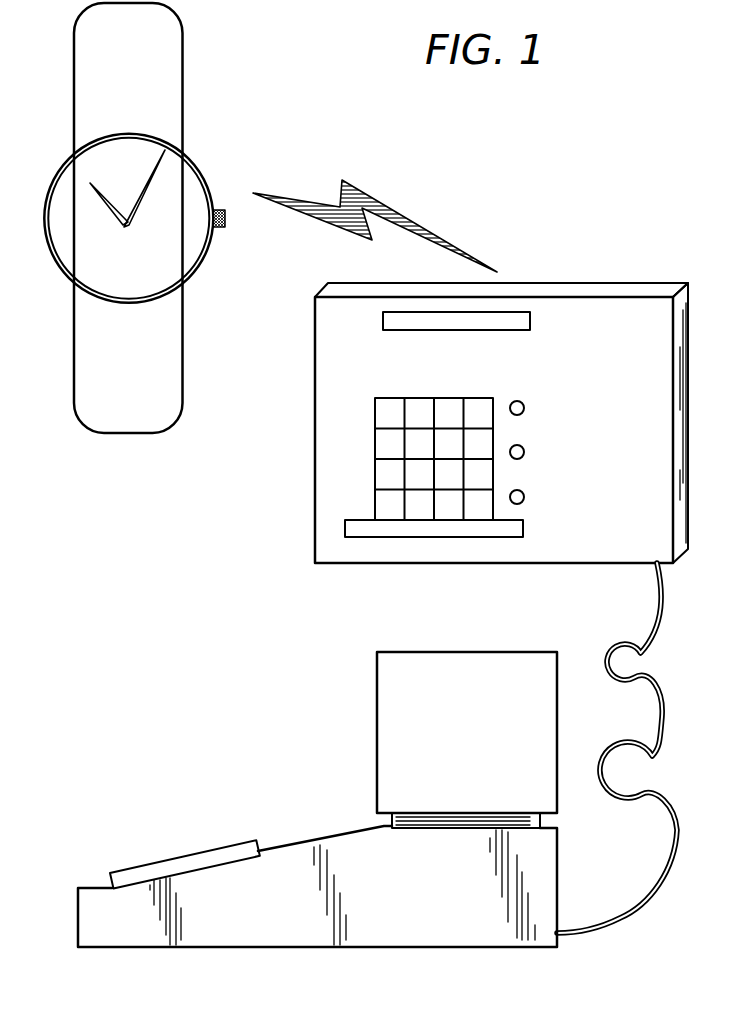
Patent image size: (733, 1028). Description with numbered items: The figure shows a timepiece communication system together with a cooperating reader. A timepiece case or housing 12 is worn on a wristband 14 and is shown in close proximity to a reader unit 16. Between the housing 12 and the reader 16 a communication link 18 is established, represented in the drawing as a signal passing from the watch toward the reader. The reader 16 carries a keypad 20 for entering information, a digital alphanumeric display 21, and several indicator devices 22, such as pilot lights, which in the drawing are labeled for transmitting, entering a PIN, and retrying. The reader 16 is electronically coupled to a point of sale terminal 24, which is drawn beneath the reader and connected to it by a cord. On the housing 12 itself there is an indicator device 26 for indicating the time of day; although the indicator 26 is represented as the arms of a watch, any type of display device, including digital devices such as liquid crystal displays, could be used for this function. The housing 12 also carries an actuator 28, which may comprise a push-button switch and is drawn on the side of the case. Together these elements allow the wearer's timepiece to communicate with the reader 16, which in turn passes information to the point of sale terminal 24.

The timepiece case or housing 12 is at (65, 273).
The wristband 14 is at (92, 327).
The reader unit 16 is at (630, 310).
The communication link 18 is at (379, 203).
The keypad 20 is at (378, 418).
The digital alphanumeric display 21 is at (512, 318).
The indicator devices 22 is at (522, 403).
The point of sale terminal 24 is at (385, 759).
The indicator device 26 is at (153, 188).
The actuator 28 is at (221, 229).